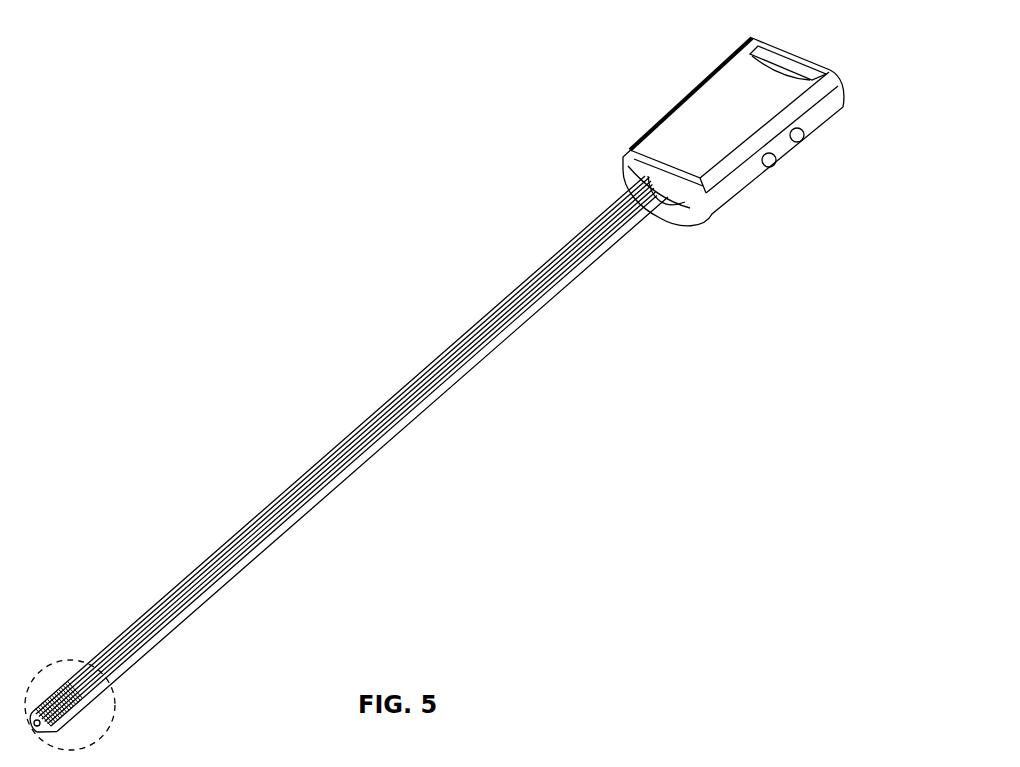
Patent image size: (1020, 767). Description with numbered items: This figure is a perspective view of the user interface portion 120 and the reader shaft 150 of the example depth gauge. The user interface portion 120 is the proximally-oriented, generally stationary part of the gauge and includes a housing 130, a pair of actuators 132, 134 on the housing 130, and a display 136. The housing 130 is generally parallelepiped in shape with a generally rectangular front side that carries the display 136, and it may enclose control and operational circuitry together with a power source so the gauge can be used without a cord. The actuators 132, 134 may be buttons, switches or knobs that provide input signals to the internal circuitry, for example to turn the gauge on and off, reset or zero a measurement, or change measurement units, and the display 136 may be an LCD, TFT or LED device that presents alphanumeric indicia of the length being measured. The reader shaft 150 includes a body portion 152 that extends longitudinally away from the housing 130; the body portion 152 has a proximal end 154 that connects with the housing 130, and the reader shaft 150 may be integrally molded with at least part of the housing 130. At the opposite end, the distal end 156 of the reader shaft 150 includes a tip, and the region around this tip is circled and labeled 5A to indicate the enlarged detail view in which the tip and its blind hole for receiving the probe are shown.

The reader shaft 150 is at (228, 192).
The user interface portion 120 is at (715, 66).
The housing 130 is at (793, 62).
The actuator 132 is at (804, 138).
The actuator 134 is at (776, 163).
The display 136 is at (692, 138).
The body portion 152 is at (398, 436).
The proximal end 154 is at (664, 213).
The distal end 156 is at (87, 717).
The detail region shown in FIG. 5A is at (76, 664).